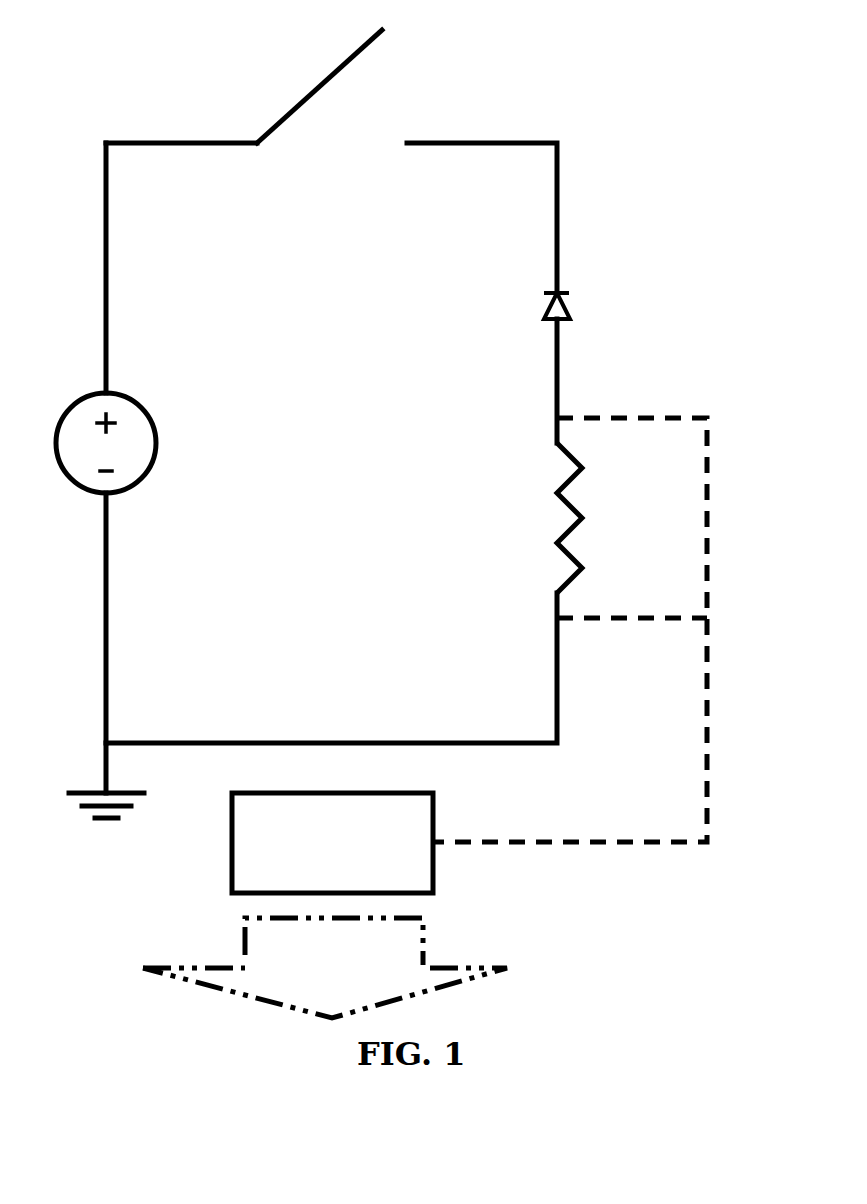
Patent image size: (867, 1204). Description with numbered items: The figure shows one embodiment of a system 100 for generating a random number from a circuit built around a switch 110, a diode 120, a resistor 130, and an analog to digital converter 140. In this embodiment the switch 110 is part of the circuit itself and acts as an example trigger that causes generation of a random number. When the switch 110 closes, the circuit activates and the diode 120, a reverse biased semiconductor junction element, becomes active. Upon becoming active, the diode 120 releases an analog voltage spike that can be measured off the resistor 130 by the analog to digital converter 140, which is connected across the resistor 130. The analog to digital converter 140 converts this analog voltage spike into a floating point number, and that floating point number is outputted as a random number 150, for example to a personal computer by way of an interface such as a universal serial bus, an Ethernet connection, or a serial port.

The system 100 is at (557, 58).
The switch 110 is at (352, 52).
The diode 120 is at (568, 313).
The resistor 130 is at (580, 515).
The analog to digital converter 140 is at (433, 808).
The random number 150 is at (481, 965).